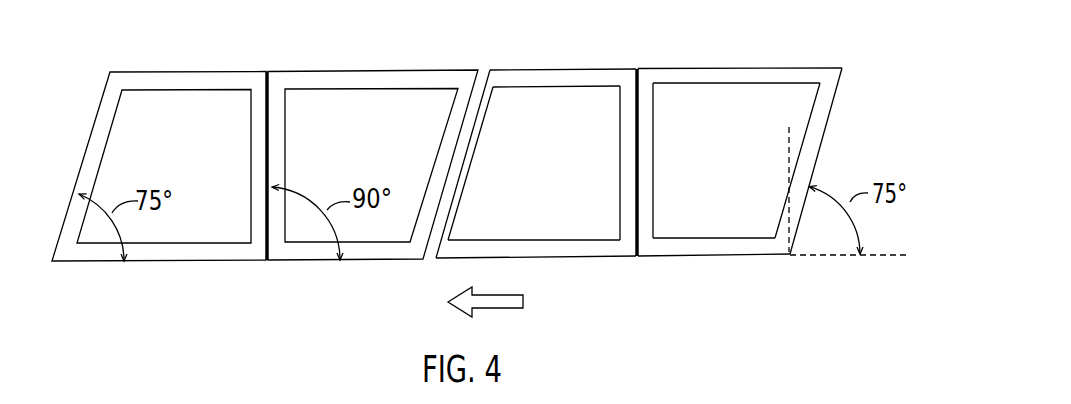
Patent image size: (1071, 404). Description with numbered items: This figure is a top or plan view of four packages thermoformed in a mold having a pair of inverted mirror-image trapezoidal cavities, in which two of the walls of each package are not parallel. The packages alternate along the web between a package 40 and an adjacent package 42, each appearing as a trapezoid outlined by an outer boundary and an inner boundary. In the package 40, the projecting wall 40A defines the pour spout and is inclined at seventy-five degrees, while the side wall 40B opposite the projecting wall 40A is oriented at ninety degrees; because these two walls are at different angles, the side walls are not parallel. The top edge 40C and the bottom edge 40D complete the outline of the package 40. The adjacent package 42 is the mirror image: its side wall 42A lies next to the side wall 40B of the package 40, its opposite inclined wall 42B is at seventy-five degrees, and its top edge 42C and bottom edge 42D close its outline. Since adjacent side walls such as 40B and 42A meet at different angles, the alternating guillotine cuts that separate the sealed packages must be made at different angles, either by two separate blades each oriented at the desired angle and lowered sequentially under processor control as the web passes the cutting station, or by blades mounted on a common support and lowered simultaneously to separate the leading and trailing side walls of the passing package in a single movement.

The package 40 is at (340, 110).
The projecting wall 40A is at (823, 135).
The side wall 40B is at (643, 150).
The top edge of first panel 40C is at (777, 78).
The bottom edge of first panel 40D is at (717, 250).
The package 42 is at (168, 115).
The side wall 42A is at (623, 123).
The second side edge of second panel 42B is at (466, 167).
The top edge of second panel 42C is at (555, 82).
The bottom edge of second panel 42D is at (577, 250).